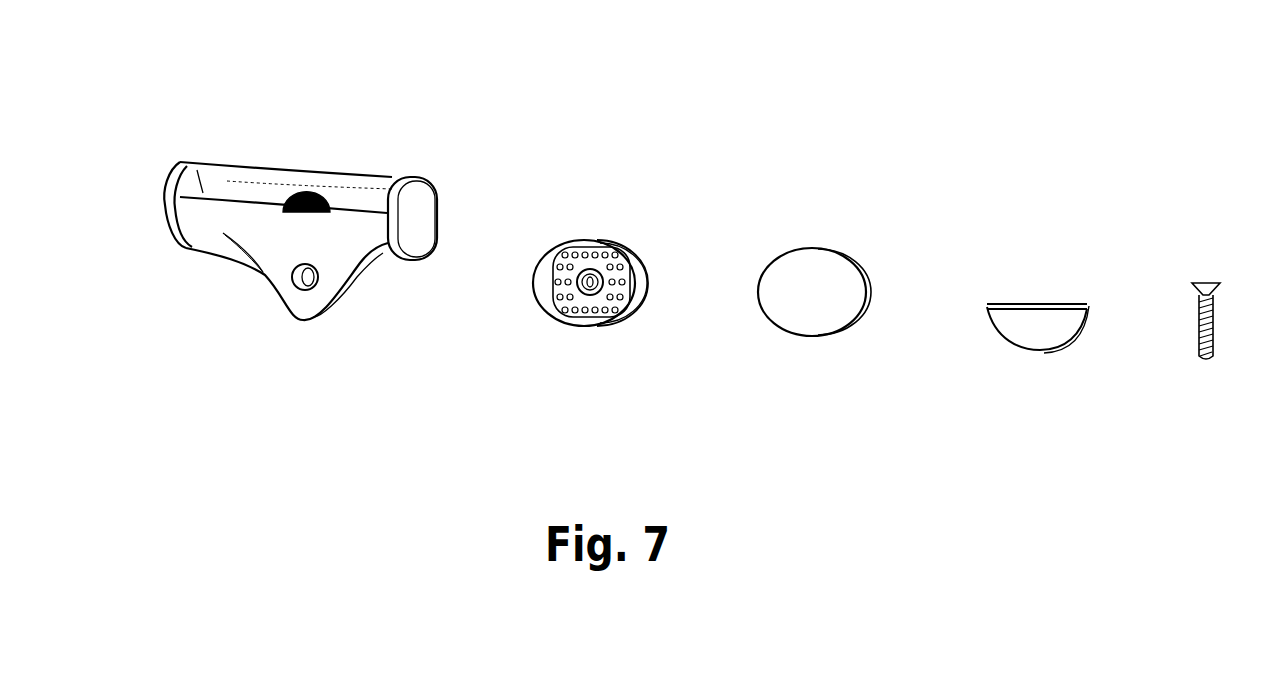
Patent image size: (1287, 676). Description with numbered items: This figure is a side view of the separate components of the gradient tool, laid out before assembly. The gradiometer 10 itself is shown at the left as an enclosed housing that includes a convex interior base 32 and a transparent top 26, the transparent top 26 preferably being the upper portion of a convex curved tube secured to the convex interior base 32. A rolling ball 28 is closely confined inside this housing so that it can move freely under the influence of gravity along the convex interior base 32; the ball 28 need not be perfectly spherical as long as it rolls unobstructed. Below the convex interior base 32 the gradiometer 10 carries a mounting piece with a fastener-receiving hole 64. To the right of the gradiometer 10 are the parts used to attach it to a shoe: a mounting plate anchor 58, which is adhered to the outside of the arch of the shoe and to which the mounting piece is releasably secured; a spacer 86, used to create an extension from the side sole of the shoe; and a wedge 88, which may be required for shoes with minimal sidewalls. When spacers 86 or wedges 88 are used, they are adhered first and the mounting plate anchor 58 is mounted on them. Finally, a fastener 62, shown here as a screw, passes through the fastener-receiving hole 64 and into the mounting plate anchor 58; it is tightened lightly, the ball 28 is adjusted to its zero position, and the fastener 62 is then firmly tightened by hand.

The gradiometer 10 is at (177, 167).
The transparent top 26 is at (253, 170).
The rolling ball 28 is at (350, 187).
The convex interior base 32 is at (210, 223).
The fastener-receiving hole 64 is at (293, 290).
The mounting plate anchor 58 is at (617, 240).
The spacer 86 is at (832, 253).
The wedge 88 is at (1025, 303).
The fastener 62 is at (1205, 282).